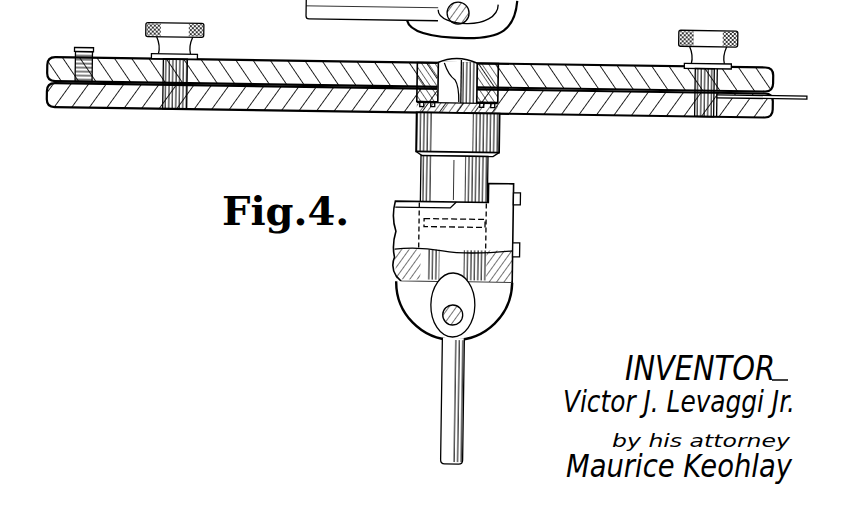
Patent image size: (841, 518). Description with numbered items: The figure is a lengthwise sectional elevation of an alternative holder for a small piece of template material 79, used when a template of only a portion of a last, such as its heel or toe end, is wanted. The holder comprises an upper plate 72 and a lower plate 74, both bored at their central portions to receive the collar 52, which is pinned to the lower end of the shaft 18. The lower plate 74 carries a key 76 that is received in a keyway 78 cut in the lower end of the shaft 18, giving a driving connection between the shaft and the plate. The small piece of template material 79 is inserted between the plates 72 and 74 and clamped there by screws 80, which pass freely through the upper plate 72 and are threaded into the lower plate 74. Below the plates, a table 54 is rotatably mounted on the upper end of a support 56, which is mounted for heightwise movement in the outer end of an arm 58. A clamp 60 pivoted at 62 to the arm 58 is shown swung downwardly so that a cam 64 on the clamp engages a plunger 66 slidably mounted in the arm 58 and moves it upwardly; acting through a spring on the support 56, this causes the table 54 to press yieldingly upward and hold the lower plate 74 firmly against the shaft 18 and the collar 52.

The shaft 18 is at (470, 63).
The collar 52 is at (483, 76).
The table 54 is at (421, 129).
The support 56 is at (424, 179).
The arm 58 is at (393, 275).
The clamp 60 is at (447, 394).
The pivot 62 is at (462, 321).
The cam 64 is at (455, 286).
The plunger 66 is at (514, 263).
The upper plate 72 is at (614, 72).
The lower plate 74 is at (590, 106).
The key 76 is at (462, 114).
The keyway 78 is at (447, 66).
The template material 79 is at (788, 101).
The screws 80 is at (176, 27).